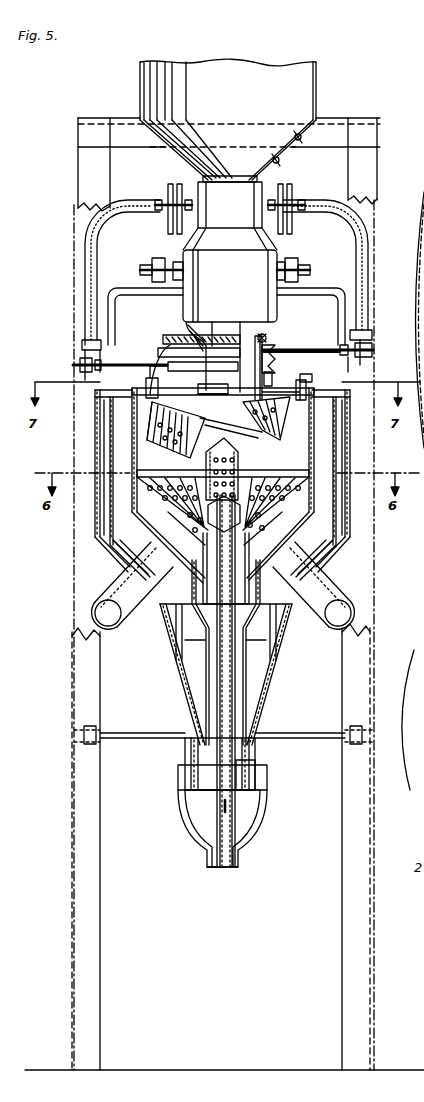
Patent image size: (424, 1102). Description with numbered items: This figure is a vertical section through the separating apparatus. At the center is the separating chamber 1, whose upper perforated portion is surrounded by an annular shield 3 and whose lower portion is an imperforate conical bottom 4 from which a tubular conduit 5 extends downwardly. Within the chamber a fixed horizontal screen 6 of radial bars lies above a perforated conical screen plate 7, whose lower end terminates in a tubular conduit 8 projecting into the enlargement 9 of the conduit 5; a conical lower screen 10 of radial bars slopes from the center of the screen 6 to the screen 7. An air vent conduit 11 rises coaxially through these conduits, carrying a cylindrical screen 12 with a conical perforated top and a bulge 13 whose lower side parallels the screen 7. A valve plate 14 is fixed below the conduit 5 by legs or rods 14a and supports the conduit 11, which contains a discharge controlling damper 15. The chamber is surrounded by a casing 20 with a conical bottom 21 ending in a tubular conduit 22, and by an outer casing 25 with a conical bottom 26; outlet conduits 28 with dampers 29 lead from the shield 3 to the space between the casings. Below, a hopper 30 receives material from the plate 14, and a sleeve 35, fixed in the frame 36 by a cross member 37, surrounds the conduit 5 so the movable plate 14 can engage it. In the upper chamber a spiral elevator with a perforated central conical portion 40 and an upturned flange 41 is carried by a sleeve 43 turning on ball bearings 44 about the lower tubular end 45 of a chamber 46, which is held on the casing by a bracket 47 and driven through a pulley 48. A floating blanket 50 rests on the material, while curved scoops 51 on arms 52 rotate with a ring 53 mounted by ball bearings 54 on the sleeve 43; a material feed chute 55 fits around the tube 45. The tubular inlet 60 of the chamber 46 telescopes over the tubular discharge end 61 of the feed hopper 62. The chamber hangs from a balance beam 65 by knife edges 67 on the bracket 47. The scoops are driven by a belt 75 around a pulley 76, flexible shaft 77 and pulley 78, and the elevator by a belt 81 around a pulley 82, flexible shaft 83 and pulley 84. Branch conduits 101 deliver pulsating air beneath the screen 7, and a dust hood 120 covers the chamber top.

The separating chamber 1 is at (312, 490).
The annular shield 3 is at (314, 420).
The conical bottom 4 is at (298, 522).
The tubular conduit 5 is at (198, 684).
The horizontal screen 6 is at (246, 476).
The conical screen plate 7 is at (268, 532).
The tubular conduit 8 is at (246, 556).
The enlargement 9 is at (250, 590).
The conical lower screen 10 is at (192, 474).
The air vent conduit 11 is at (240, 695).
The cylindrical screen 12 is at (236, 462).
The bulge 13 is at (224, 514).
The valve plate 14 is at (256, 808).
The legs or rods 14a is at (244, 772).
The discharge controlling damper 15 is at (214, 812).
The casing 20 is at (380, 520).
The conical bottom 21 is at (348, 560).
The tubular conduit 22 is at (262, 652).
The outer casing 25 is at (380, 444).
The conical bottom 26 is at (128, 565).
The outlet conduits 28 is at (112, 456).
The dampers 29 is at (350, 470).
The hopper 30 is at (270, 795).
The sleeve 35 is at (186, 748).
The frame 36 is at (356, 852).
The cross member 37 is at (292, 734).
The central conical portion 40 is at (266, 432).
The marginal upturned flange 41 is at (284, 432).
The sleeve 43 is at (232, 350).
The ball bearings 44 is at (266, 340).
The lower tubular end 45 is at (255, 372).
The chamber 46 is at (266, 268).
The bracket 47 is at (320, 300).
The pulley 48 is at (274, 350).
The blanket 50 is at (152, 380).
The scoops 51 is at (320, 382).
The arms 52 is at (300, 382).
The ring 53 is at (273, 375).
The ball bearings 54 is at (255, 380).
The material feed chute 55 is at (194, 430).
The tubular inlet 60 is at (196, 222).
The tubular discharge end 61 is at (255, 198).
The feed hopper 62 is at (228, 120).
The balance beam 65 is at (156, 262).
The knife edges 67 is at (318, 262).
The belt 75 is at (170, 345).
The pulley 76 is at (85, 365).
The flexible shaft 77 is at (85, 292).
The pulley 78 is at (168, 196).
The belt 81 is at (330, 346).
The pulley 82 is at (372, 352).
The flexible shaft 83 is at (368, 285).
The pulley 84 is at (318, 193).
The branch conduits 101 is at (380, 613).
The dust hood 120 is at (124, 312).